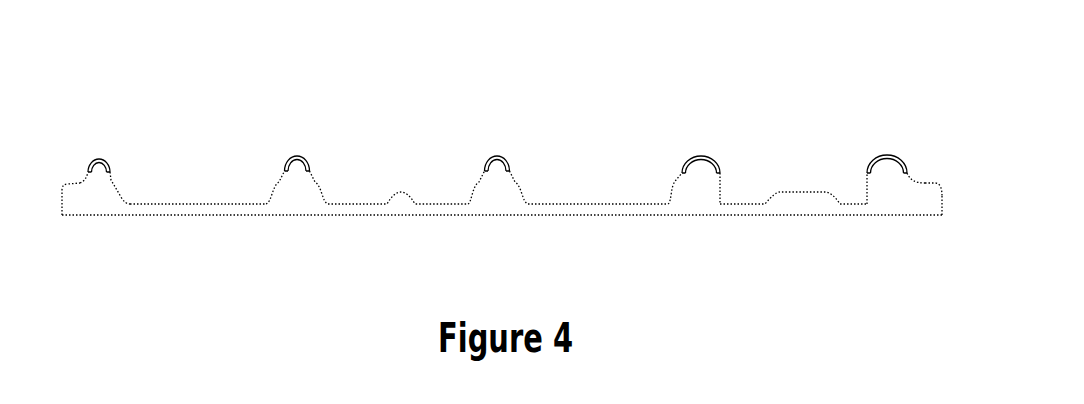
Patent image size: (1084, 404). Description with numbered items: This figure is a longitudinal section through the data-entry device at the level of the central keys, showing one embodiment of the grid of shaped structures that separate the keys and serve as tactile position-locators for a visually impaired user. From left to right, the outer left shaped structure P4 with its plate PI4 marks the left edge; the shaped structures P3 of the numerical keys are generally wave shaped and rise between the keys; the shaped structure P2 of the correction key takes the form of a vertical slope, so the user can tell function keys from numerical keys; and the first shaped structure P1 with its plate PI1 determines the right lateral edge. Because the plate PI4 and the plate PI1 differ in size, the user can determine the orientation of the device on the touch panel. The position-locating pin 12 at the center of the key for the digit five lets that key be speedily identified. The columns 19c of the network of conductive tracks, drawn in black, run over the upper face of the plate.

The position-locating pin 12 is at (380, 205).
The conductive tracks in columns 19c is at (99, 159).
The outer left shaped structure P4 is at (52, 158).
The plate of the outer left shaped structure PI4 is at (75, 168).
The shaped structures of the numerical keys P3 is at (135, 185).
The shaped structure of the correction key P2 is at (733, 174).
The first shaped structure P1 is at (923, 140).
The plate of the outer right shaped structure PI1 is at (929, 172).